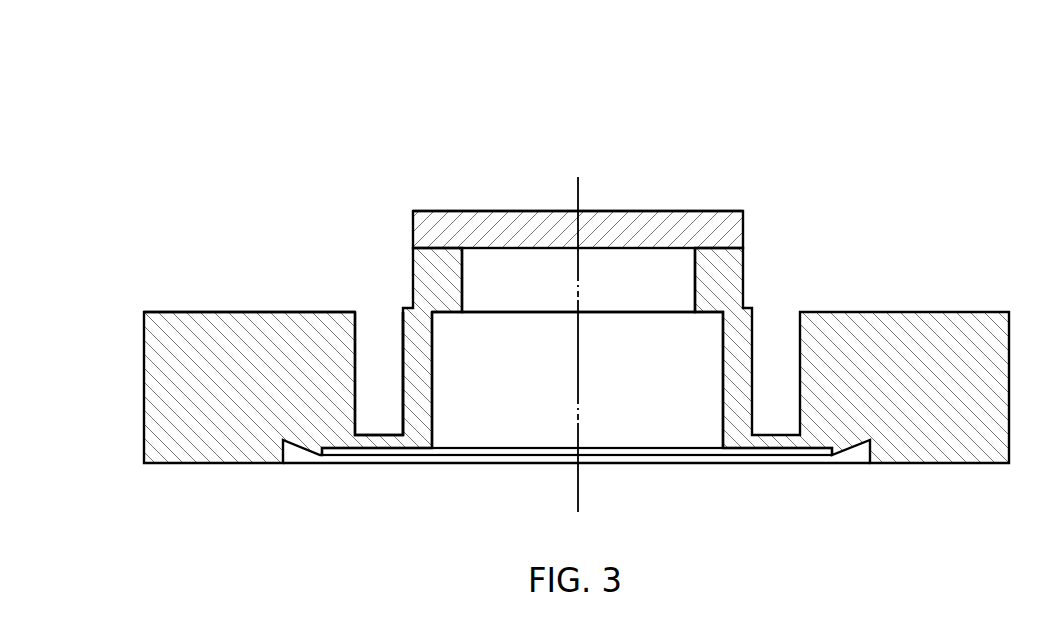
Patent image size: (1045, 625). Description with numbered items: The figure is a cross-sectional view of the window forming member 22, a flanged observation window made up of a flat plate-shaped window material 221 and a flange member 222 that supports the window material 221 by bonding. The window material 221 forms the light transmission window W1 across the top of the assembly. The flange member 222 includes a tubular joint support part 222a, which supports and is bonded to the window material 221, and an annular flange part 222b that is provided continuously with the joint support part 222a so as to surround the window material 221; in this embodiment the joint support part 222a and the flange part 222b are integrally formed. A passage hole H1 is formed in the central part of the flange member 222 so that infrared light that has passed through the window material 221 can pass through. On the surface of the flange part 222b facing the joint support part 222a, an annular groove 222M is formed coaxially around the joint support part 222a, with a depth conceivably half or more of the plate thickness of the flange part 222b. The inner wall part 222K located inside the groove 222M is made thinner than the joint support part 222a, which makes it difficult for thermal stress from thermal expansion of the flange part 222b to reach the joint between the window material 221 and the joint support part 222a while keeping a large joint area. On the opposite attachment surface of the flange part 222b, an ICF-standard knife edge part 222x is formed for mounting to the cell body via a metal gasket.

The window forming member 22 is at (258, 91).
The window material 221 is at (453, 210).
The light transmission window W1 is at (637, 210).
The flange member 222 is at (144, 386).
The joint support part 222a is at (463, 280).
The flange part 222b is at (223, 312).
The inner wall part 222K is at (424, 344).
The groove 222M is at (376, 367).
The knife edge part 222x is at (317, 455).
The passage hole H1 is at (619, 377).